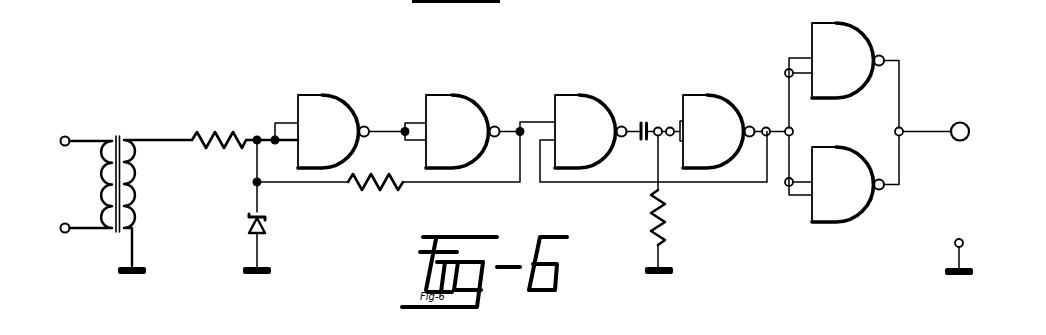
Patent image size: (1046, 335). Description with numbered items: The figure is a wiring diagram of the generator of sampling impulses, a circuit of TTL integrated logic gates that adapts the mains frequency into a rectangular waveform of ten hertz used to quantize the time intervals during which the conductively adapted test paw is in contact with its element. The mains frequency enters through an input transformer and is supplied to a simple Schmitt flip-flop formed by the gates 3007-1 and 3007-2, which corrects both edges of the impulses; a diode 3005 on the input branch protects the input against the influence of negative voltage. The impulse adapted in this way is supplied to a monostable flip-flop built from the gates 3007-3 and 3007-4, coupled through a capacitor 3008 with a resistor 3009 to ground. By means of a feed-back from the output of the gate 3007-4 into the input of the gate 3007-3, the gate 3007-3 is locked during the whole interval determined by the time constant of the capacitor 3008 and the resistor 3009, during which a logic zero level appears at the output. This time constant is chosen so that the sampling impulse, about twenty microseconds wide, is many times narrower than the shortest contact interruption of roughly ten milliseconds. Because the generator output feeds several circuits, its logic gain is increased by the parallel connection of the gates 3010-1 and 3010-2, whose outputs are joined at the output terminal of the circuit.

The diode 3005 is at (284, 243).
The gate 3007-1 is at (343, 118).
The gate 3007-2 is at (468, 118).
The gate 3007-3 is at (593, 118).
The gate 3007-4 is at (725, 118).
The capacitor 3008 is at (647, 116).
The resistor 3009 is at (685, 205).
The gate 3010-1 is at (848, 64).
The gate 3010-2 is at (854, 194).